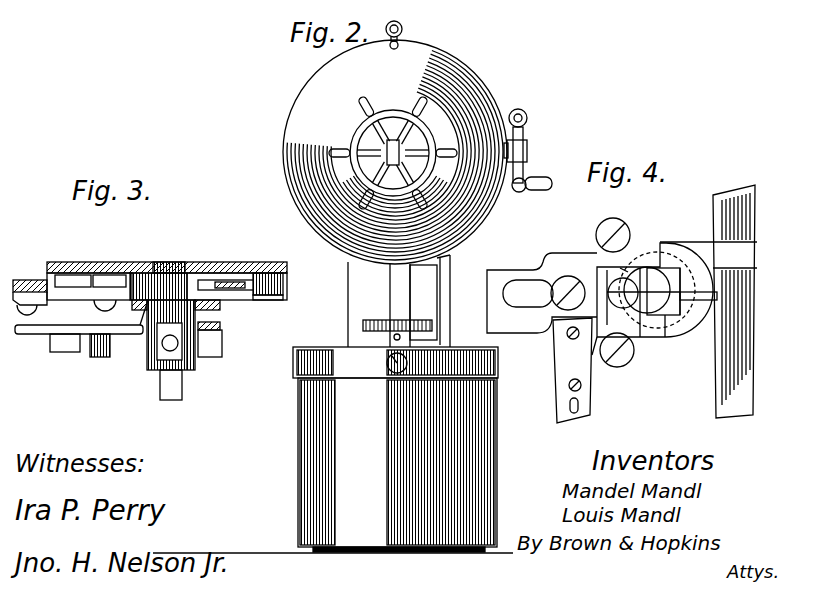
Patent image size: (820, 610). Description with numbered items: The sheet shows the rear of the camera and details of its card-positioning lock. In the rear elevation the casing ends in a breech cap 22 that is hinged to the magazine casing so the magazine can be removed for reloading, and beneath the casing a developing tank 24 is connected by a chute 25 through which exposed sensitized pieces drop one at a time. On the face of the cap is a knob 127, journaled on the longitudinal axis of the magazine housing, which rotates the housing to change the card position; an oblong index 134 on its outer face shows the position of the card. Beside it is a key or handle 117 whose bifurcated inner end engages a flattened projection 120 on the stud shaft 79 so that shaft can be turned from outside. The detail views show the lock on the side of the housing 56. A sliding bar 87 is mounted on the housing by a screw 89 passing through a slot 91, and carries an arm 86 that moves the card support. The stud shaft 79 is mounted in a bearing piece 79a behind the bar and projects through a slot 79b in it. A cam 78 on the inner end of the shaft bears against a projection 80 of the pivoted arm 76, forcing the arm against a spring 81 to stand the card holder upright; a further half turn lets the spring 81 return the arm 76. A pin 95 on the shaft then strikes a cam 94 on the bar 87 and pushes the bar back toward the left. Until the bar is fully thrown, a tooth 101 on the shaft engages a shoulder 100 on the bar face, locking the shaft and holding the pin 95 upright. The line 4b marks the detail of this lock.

In FIG. 2, the breech cap 22 is at (486, 87).
In FIG. 2, the developing tank 24 is at (487, 505).
In FIG. 2, the chute 25 is at (451, 282).
In FIG. 3, the housing 56 is at (240, 262).
In FIG. 3, the arm 76 is at (220, 282).
In FIG. 4, the arm 76 is at (744, 348).
In FIG. 3, the cam 78 is at (152, 280).
In FIG. 4, the cam 78 is at (597, 320).
In FIG. 3, the stud shaft 79 is at (208, 300).
In FIG. 4, the stud shaft 79 is at (640, 272).
In FIG. 3, the bearing piece 79a is at (140, 330).
In FIG. 4, the slot 79b is at (627, 270).
In FIG. 3, the projection 80 is at (226, 289).
In FIG. 4, the projection 80 is at (733, 258).
In FIG. 3, the spring 81 is at (270, 286).
In FIG. 4, the arm 86 is at (562, 370).
In FIG. 3, the sliding bar 87 is at (25, 334).
In FIG. 4, the sliding bar 87 is at (488, 318).
In FIG. 3, the screw 89 is at (60, 346).
In FIG. 4, the screw 89 is at (568, 290).
In FIG. 4, the slot 91 is at (533, 298).
In FIG. 3, the cam 94 is at (99, 352).
In FIG. 4, the cam 94 is at (598, 340).
In FIG. 3, the pin 95 is at (168, 346).
In FIG. 4, the pin 95 is at (665, 268).
In FIG. 3, the shoulder 100 is at (212, 343).
In FIG. 4, the shoulder 100 is at (690, 302).
In FIG. 3, the tooth 101 is at (191, 352).
In FIG. 4, the tooth 101 is at (687, 268).
In FIG. 2, the key or handle 117 is at (527, 115).
In FIG. 3, the flattened projection 120 is at (172, 395).
In FIG. 4, the flattened projection 120 is at (665, 317).
In FIG. 2, the knob 127 is at (364, 103).
In FIG. 2, the index figure 134 is at (394, 138).
In FIG. 4, the section line 4b is at (592, 270).